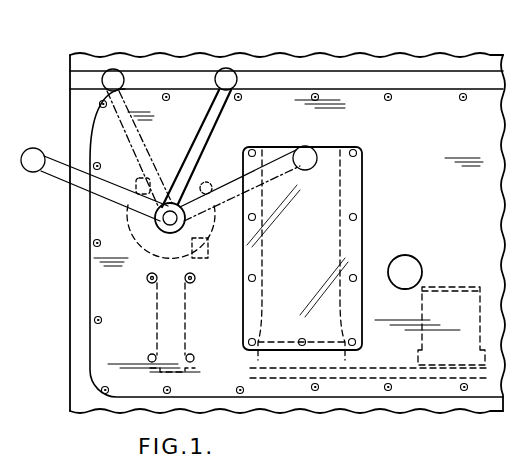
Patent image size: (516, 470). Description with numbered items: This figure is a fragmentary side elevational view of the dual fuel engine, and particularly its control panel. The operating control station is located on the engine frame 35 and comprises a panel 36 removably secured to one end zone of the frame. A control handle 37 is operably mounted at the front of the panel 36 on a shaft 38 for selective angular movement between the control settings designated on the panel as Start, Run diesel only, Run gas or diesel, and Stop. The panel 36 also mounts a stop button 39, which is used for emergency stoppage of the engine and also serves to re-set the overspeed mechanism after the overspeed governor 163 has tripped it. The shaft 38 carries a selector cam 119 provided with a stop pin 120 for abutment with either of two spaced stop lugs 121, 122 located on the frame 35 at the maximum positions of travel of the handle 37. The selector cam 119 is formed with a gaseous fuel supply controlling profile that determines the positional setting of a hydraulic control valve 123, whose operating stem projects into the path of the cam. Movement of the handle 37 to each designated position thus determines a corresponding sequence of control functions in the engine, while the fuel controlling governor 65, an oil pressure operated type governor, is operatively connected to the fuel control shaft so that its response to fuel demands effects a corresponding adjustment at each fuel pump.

The engine frame 35 is at (355, 71).
The panel 36 is at (100, 277).
The control handle 37 is at (208, 128).
The shaft 38 is at (163, 232).
The stop button 39 is at (410, 257).
The fuel controlling governor 65 is at (340, 187).
The selector cam 119 is at (208, 244).
The stop pin 120 is at (206, 186).
The stop lug 121 is at (196, 278).
The stop lug 122 is at (140, 178).
The hydraulic control valve 123 is at (157, 323).
The overspeed governor 163 is at (463, 285).